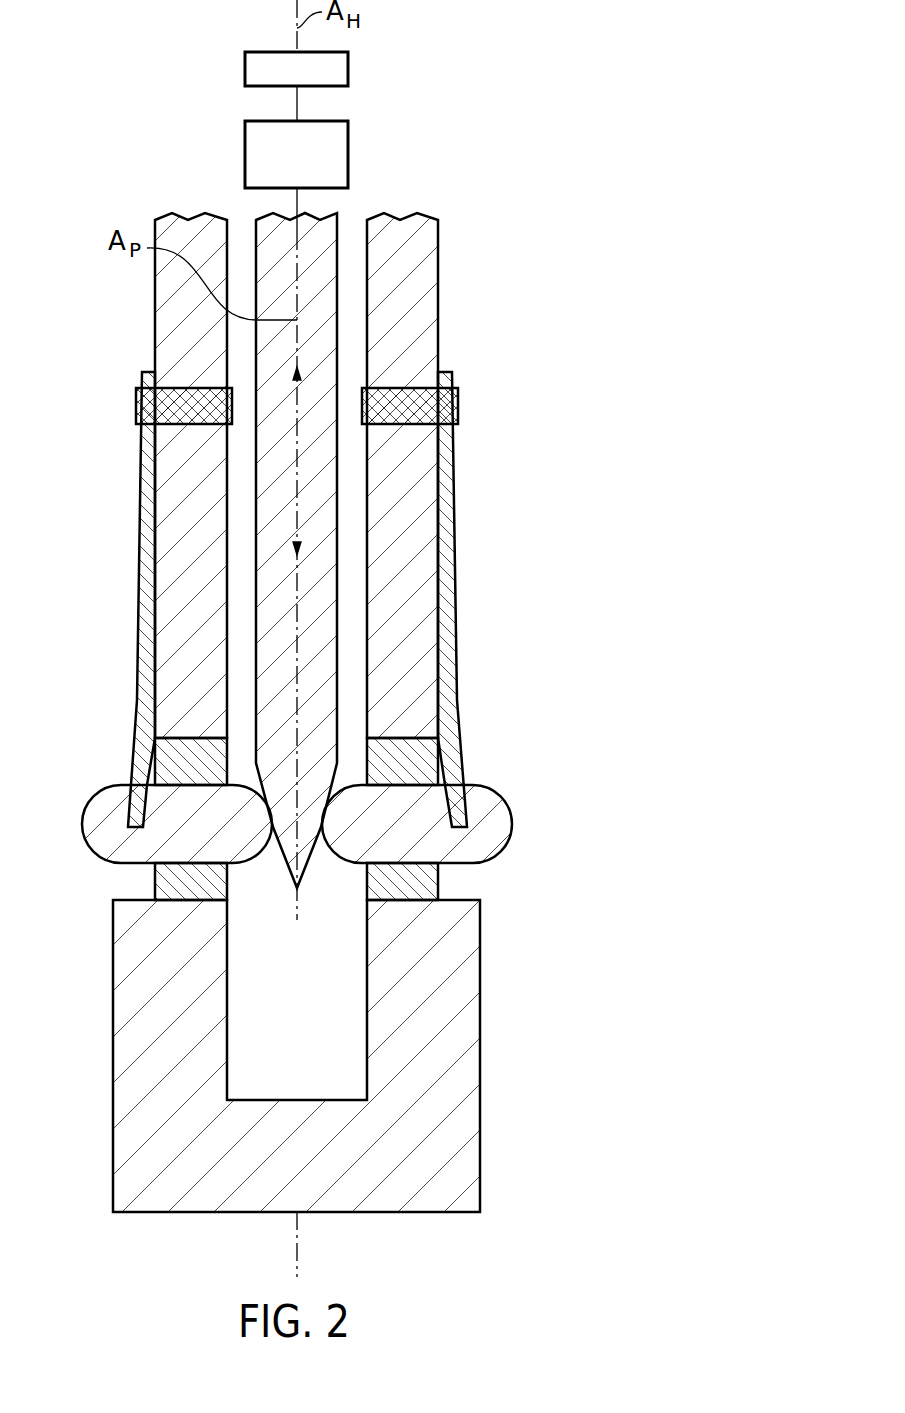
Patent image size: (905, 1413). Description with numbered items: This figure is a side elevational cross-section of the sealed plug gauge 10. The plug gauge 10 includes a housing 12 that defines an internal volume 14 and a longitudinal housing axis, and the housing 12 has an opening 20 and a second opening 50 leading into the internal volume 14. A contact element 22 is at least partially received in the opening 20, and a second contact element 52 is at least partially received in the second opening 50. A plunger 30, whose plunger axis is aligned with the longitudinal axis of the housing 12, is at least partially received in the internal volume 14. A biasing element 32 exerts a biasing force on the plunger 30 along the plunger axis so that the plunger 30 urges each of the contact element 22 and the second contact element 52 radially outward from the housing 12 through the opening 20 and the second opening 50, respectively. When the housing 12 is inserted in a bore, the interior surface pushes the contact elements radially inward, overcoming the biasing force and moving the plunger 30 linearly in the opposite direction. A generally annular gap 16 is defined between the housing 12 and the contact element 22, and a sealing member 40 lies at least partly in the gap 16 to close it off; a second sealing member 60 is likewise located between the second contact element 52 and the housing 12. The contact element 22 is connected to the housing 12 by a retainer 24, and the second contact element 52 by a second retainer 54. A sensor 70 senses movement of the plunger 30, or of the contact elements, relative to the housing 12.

The plug gauge 10 is at (558, 198).
The housing 12 is at (438, 282).
The internal volume 14 is at (358, 360).
The gap 16 is at (480, 895).
The opening 20 is at (418, 740).
The contact element 22 is at (512, 825).
The retainer 24 is at (456, 632).
The plunger 30 is at (327, 473).
The biasing element 32 is at (348, 155).
The sealing member 40 is at (438, 870).
The second opening 50 is at (172, 740).
The second contact element 52 is at (82, 825).
The second retainer 54 is at (137, 632).
The second sealing member 60 is at (155, 870).
The sensor 70 is at (348, 70).